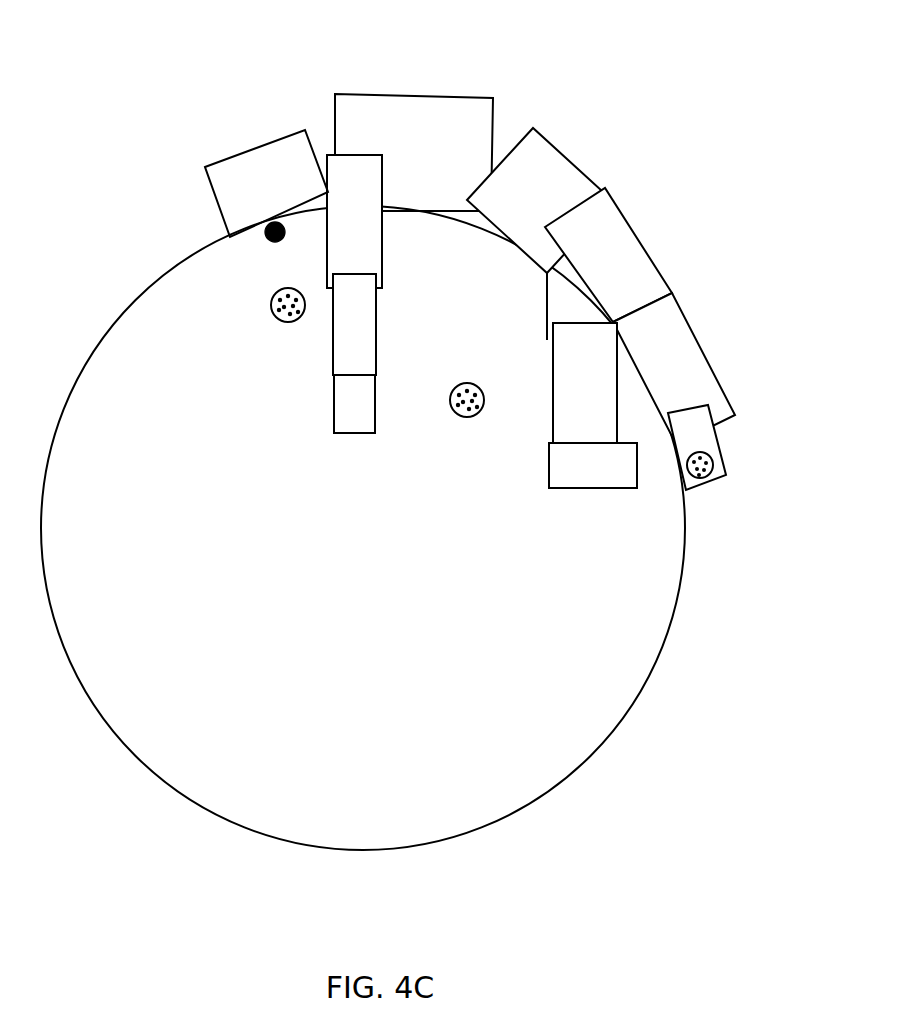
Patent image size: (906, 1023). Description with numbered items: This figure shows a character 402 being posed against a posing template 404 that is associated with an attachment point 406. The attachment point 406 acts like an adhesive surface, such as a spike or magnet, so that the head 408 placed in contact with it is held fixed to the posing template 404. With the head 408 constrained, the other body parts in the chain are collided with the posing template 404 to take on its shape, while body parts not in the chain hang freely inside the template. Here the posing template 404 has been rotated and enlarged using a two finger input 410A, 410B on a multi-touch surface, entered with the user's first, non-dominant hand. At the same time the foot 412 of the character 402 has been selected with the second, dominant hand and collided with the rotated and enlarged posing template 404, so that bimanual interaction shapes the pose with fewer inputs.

The character 402 is at (583, 125).
The posing template 404 is at (98, 347).
The attachment point 406 is at (266, 242).
The head 408 is at (248, 150).
The two finger input 410A is at (277, 320).
The two finger input 410B is at (457, 416).
The foot 412 is at (713, 472).